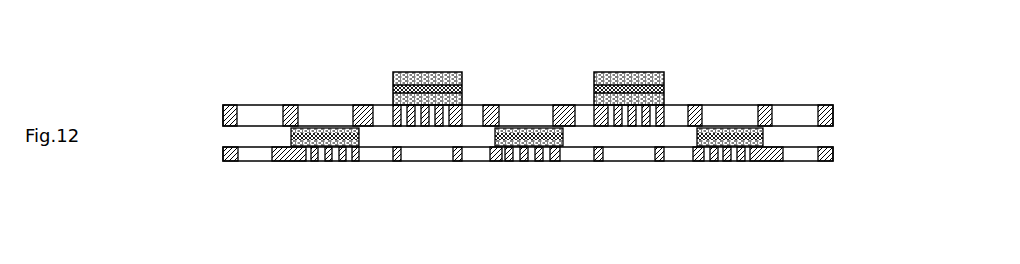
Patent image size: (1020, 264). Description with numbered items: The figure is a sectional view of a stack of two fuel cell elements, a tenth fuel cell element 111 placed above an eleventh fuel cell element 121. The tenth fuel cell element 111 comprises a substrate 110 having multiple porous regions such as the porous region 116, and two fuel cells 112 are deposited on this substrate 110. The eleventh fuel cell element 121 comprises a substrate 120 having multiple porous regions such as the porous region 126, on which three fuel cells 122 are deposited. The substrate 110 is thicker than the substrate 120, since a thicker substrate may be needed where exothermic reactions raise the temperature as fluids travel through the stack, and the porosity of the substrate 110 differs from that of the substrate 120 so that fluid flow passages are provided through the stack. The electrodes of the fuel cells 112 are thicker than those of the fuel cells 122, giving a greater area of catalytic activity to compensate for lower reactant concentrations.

The substrate 110 is at (223, 105).
The tenth fuel cell element 111 is at (842, 113).
The fuel cell 112 is at (420, 70).
The porous region 116 is at (445, 108).
The substrate 120 is at (223, 162).
The eleventh fuel cell element 121 is at (840, 157).
The fuel cell 122 is at (365, 132).
The porous region 126 is at (322, 158).